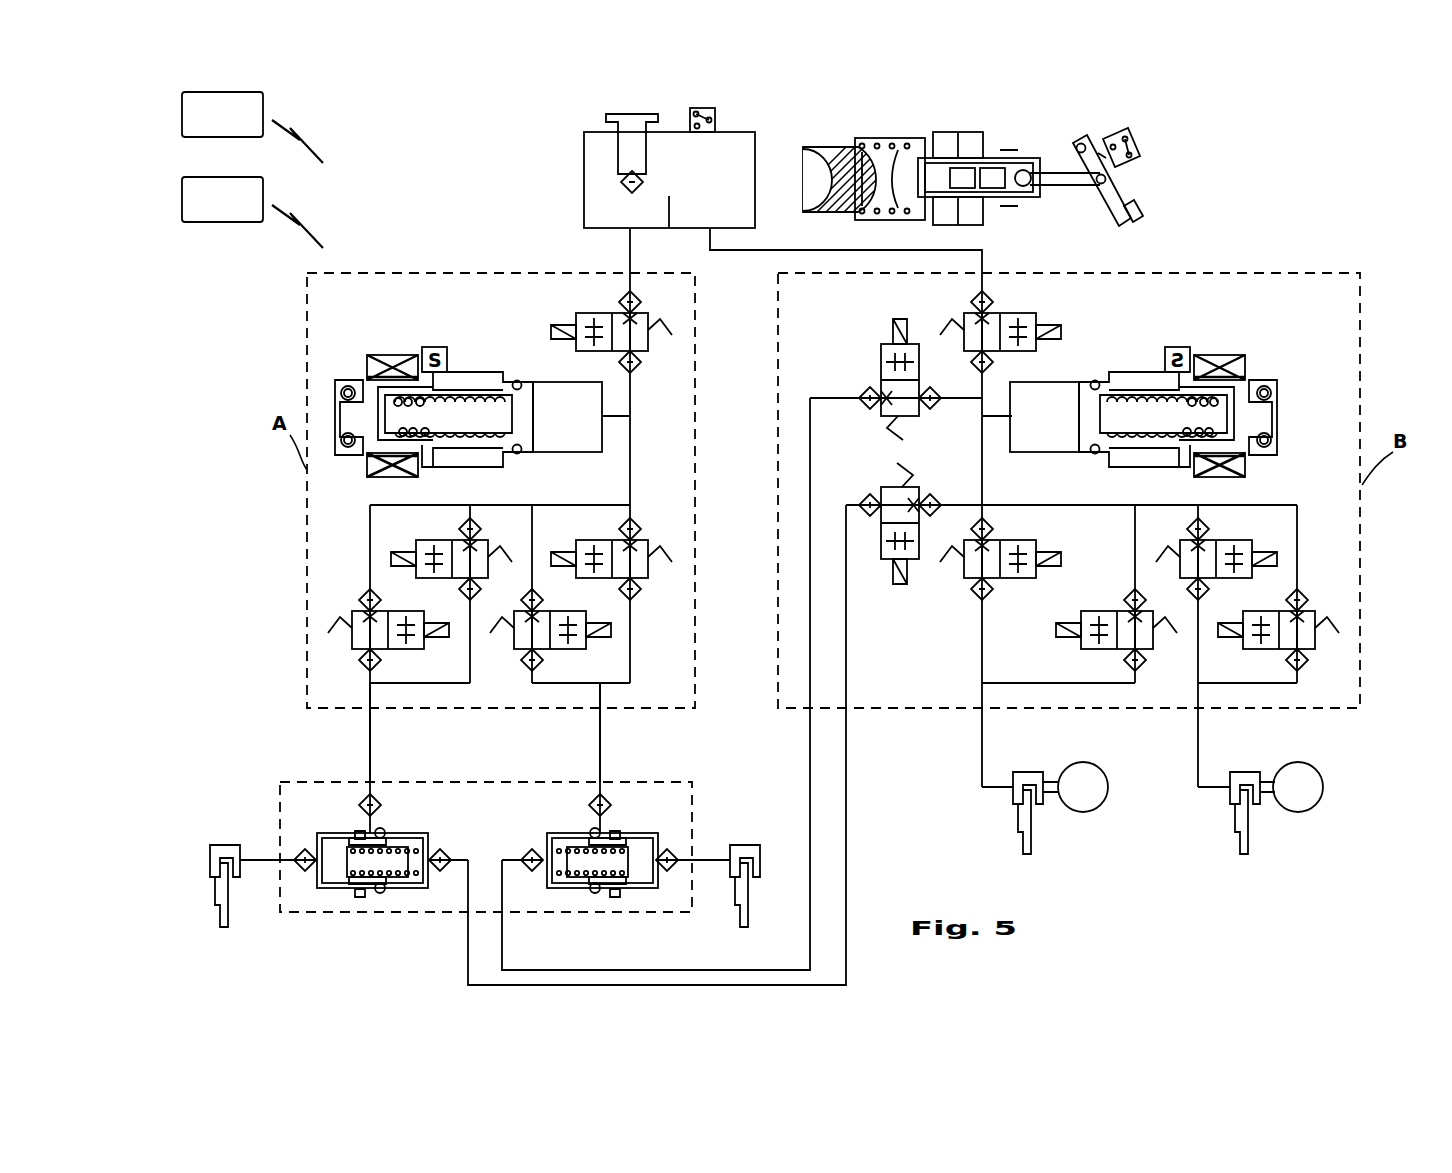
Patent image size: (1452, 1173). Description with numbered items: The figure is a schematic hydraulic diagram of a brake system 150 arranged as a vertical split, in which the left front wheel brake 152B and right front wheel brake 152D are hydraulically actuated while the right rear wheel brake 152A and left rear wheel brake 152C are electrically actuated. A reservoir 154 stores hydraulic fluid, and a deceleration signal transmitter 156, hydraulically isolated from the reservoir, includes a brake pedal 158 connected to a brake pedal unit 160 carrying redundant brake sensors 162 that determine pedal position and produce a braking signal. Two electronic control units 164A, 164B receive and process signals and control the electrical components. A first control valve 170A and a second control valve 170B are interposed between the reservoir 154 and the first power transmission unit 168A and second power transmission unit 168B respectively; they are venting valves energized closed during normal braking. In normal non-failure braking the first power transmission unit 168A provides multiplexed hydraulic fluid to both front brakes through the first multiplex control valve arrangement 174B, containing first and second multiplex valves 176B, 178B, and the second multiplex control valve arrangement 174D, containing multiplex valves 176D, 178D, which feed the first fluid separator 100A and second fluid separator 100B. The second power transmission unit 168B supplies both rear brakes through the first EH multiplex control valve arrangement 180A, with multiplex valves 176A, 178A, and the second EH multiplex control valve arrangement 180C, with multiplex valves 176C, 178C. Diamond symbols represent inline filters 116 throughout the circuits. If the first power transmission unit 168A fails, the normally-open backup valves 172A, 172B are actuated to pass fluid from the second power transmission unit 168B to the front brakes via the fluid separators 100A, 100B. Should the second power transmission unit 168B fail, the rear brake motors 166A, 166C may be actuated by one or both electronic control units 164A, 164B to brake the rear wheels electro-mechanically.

The brake system 150 is at (1272, 150).
The reservoir 154 is at (720, 127).
The deceleration signal transmitter 156 is at (841, 137).
The brake pedal 158 is at (1158, 212).
The brake pedal unit 160 is at (1062, 205).
The brake sensor 162 is at (972, 131).
The first electronic control unit 164A is at (253, 127).
The second electronic control unit 164B is at (253, 212).
The first power transmission unit 168A is at (352, 362).
The second power transmission unit 168B is at (1258, 365).
The first control valve 170A is at (652, 320).
The second control valve 170B is at (1040, 320).
The first backup valve 172A is at (893, 583).
The second backup valve 172B is at (880, 345).
The first multiplex control valve arrangement 174B is at (418, 692).
The second multiplex control valve arrangement 174D is at (625, 692).
The first multiplex valve 176A is at (1215, 541).
The first multiplex valve 176B is at (462, 545).
The first multiplex valve 176C is at (1003, 541).
The first multiplex valve 176D is at (645, 545).
The second multiplex valve 178A is at (1315, 610).
The second multiplex valve 178B is at (368, 607).
The second multiplex valve 178C is at (1115, 611).
The second multiplex valve 178D is at (553, 648).
The first EH multiplex control valve arrangement 180A is at (1327, 658).
The second EH multiplex control valve arrangement 180C is at (1013, 652).
The first fluid separator 100A is at (376, 905).
The second fluid separator 100B is at (577, 905).
The inline filter 116 is at (447, 851).
The right rear wheel brake 152A is at (1263, 773).
The left front wheel brake 152B is at (210, 856).
The left rear wheel brake 152C is at (1047, 773).
The right front wheel brake 152D is at (762, 850).
The rear brake motor 166A is at (1305, 811).
The rear brake motor 166C is at (1095, 811).